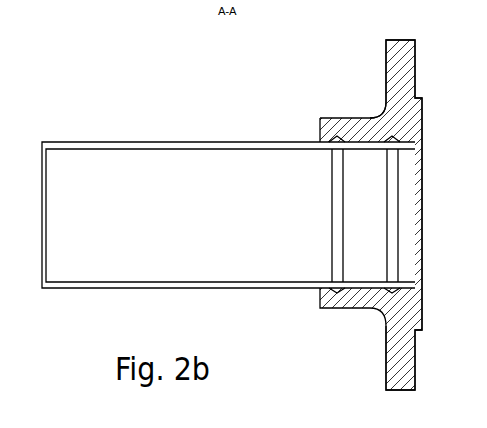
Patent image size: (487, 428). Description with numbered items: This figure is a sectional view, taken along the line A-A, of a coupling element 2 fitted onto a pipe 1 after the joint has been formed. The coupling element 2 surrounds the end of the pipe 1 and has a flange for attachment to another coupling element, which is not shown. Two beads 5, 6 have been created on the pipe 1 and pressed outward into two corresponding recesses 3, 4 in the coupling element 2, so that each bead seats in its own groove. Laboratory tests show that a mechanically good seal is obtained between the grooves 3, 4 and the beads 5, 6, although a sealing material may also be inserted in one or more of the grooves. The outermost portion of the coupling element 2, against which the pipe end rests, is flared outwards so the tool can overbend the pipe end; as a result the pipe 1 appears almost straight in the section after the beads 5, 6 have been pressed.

The pipe 1 is at (98, 141).
The coupling element 2 is at (413, 42).
The recess 3 is at (326, 136).
The recess 4 is at (383, 139).
The bead 5 is at (336, 151).
The bead 6 is at (398, 151).